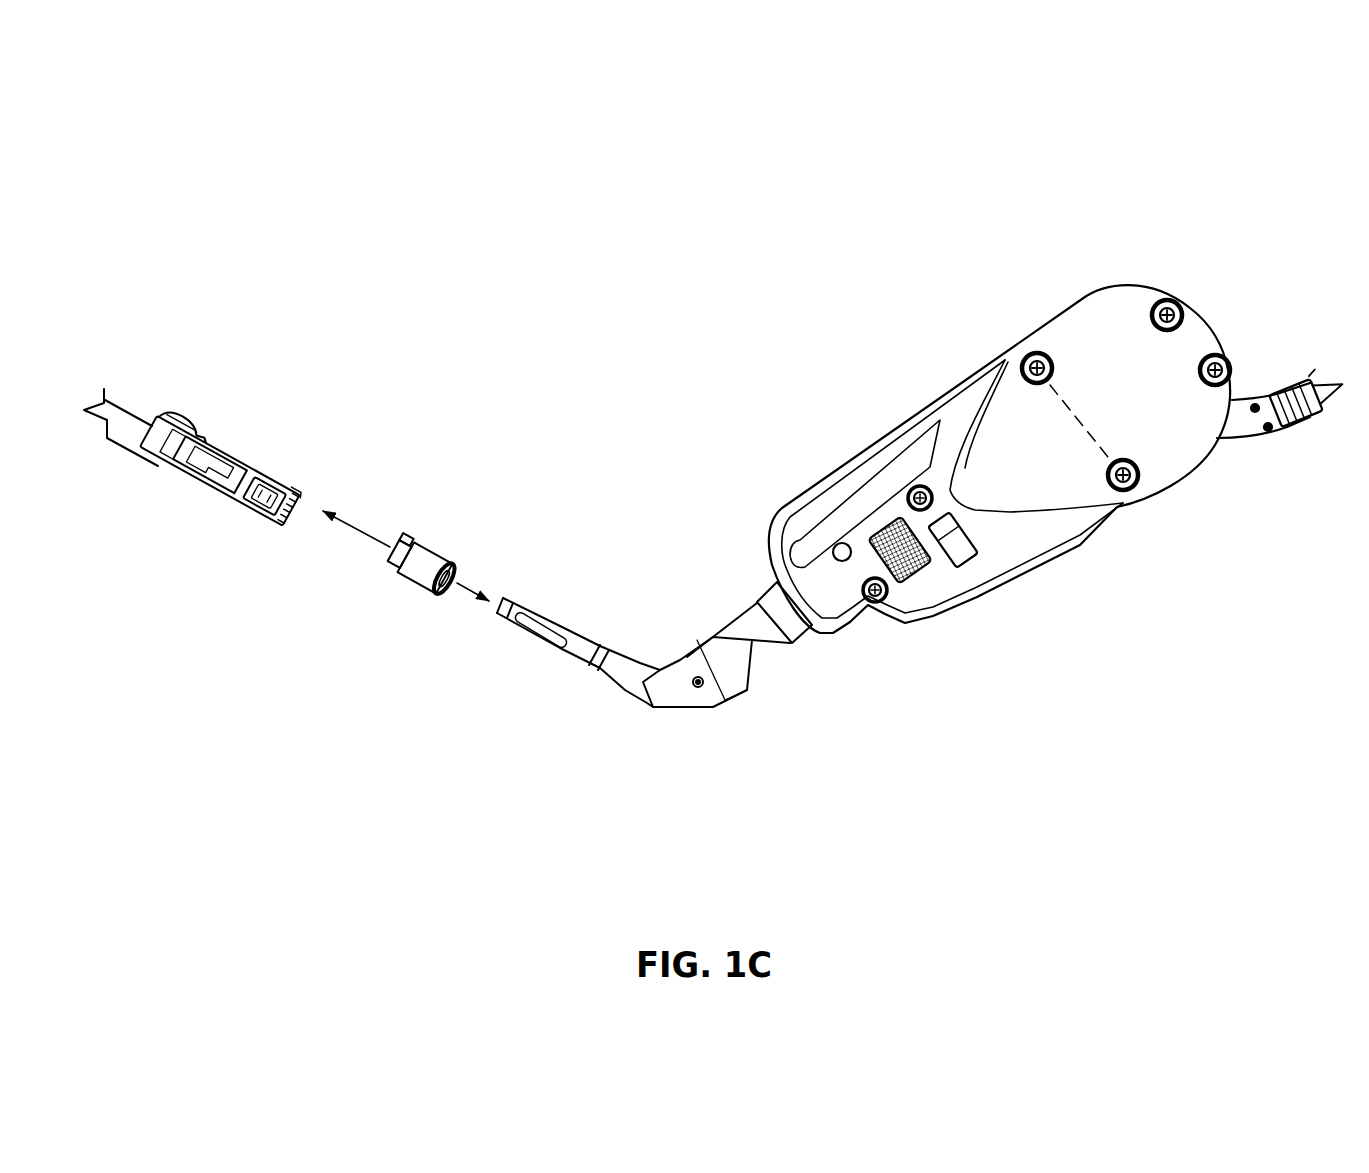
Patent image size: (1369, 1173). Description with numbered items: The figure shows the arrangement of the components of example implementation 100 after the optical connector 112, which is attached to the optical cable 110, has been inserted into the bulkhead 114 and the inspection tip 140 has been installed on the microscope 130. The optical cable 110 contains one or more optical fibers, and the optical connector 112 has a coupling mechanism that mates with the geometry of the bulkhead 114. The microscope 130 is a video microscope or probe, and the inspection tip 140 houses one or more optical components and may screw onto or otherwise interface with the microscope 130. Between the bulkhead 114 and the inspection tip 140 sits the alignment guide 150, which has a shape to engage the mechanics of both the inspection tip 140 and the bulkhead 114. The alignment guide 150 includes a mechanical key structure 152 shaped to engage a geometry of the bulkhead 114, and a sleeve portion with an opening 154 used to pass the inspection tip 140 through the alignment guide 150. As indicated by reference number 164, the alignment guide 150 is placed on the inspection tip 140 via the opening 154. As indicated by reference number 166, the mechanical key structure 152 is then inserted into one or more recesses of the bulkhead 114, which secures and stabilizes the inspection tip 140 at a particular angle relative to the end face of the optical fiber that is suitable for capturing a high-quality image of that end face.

The example implementation 100 is at (156, 95).
The optical cable 110 is at (131, 409).
The optical connector 112 is at (191, 481).
The bulkhead 114 is at (261, 457).
The microscope 130 is at (1215, 561).
The inspection tip 140 is at (888, 694).
The alignment guide 150 is at (416, 589).
The mechanical key structure 152 is at (411, 536).
The opening 154 is at (582, 544).
The placing alignment guide on inspection tip 164 is at (463, 605).
The inserting key structure into bulkhead recess 166 is at (350, 538).